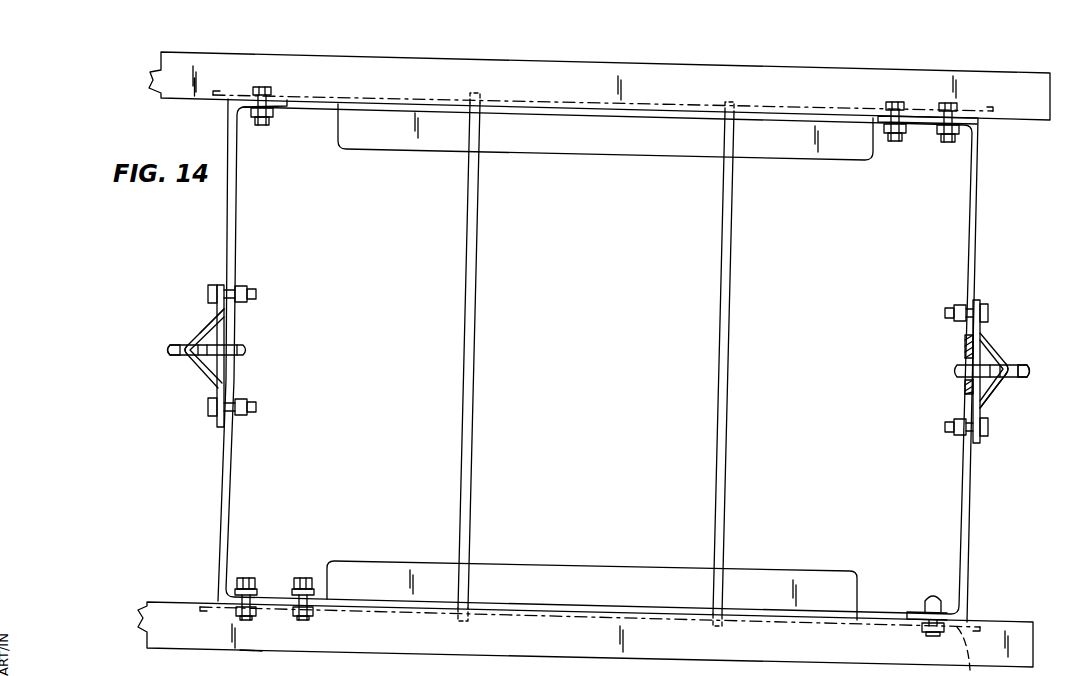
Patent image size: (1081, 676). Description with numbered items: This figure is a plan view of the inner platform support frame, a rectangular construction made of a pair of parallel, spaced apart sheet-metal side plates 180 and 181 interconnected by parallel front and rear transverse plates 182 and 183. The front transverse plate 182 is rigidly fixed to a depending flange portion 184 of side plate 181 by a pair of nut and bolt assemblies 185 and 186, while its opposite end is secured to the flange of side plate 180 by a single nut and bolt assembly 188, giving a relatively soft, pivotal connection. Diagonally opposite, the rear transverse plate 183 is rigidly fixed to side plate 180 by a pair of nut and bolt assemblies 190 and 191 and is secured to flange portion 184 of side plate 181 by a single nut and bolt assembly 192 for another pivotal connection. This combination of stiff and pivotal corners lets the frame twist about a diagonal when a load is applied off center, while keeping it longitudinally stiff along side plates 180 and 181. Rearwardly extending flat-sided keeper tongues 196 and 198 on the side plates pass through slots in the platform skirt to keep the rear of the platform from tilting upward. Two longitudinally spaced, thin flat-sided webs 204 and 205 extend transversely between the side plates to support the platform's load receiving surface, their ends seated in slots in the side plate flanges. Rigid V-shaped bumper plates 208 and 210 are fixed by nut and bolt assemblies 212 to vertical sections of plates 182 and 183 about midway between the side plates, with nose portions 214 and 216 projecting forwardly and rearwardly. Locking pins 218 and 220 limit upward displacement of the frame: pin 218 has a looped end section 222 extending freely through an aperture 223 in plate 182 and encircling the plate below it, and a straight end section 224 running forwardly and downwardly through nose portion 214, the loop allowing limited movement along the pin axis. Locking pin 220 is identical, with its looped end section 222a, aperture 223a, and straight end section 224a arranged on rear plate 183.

The side plate 180 is at (630, 578).
The side plate 181 is at (280, 62).
The front transverse plate 182 is at (979, 252).
The rear transverse plate 183 is at (229, 209).
The depending flange portion 184 is at (975, 108).
The nut and bolt assembly 185 is at (906, 133).
The nut and bolt assembly 186 is at (948, 136).
The nut and bolt assembly 188 is at (935, 598).
The nut and bolt assembly 190 is at (248, 577).
The nut and bolt assembly 191 is at (304, 576).
The nut and bolt assembly 192 is at (269, 119).
The keeper tongue 196 is at (141, 613).
The keeper tongue 198 is at (152, 75).
The web 204 is at (479, 466).
The web 205 is at (731, 465).
The bumper plate 208 is at (991, 396).
The bumper plate 210 is at (207, 381).
The nut and bolt assemblies 212 is at (216, 293).
The nose portion 214 is at (1008, 371).
The nose portion 216 is at (172, 344).
The locking pin 218 is at (1017, 386).
The locking pin 220 is at (180, 338).
The looped end section 222 is at (952, 373).
The looped end section 222a is at (248, 352).
The aperture 223 is at (963, 362).
The aperture 223a is at (250, 655).
The straight end section 224 is at (1029, 370).
The straight end section 224a is at (169, 353).